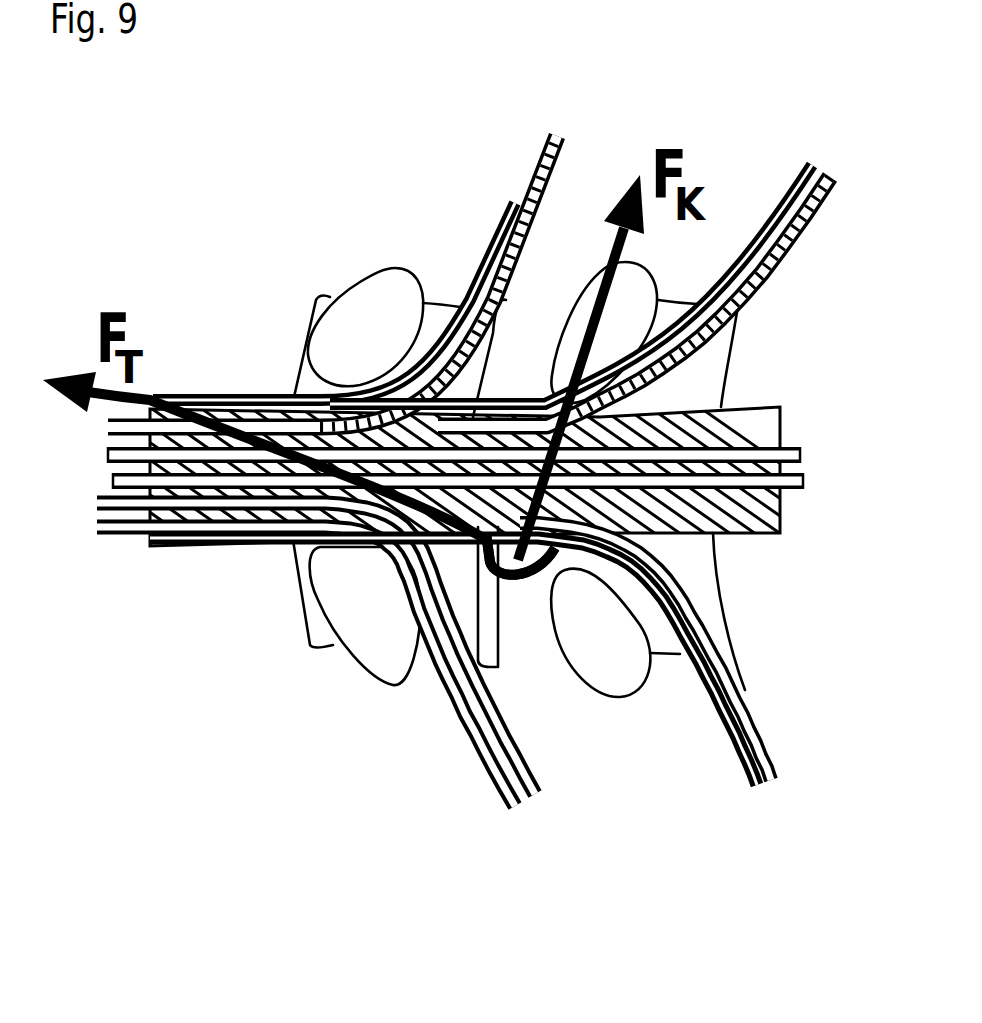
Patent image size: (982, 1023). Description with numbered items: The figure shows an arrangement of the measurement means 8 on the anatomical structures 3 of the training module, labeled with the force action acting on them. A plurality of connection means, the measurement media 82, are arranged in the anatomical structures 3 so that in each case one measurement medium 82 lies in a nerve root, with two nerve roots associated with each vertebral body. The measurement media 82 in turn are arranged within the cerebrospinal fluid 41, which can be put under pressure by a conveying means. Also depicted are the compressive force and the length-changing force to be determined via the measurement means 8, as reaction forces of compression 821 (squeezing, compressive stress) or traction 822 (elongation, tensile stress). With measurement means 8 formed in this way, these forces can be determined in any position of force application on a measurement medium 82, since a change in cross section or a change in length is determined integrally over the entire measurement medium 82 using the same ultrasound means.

The anatomical structures 3 is at (250, 717).
The measurement means 8 is at (48, 398).
The cerebrospinal fluid 41 is at (760, 405).
The measurement medium 82 is at (556, 130).
The compression 821 is at (503, 577).
The traction 822 is at (520, 605).